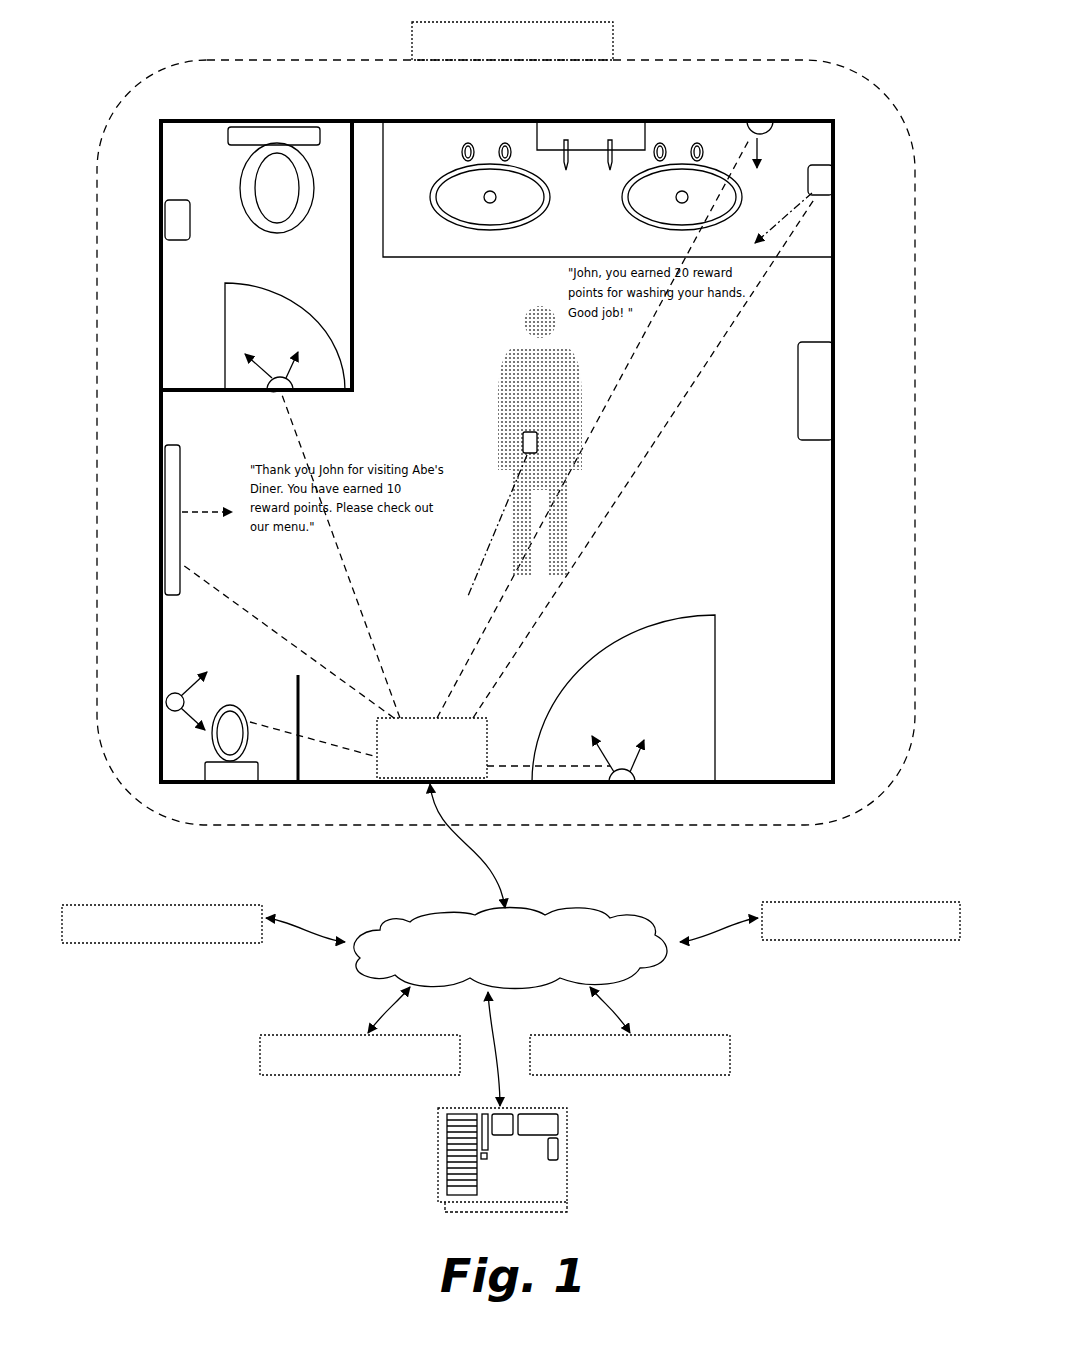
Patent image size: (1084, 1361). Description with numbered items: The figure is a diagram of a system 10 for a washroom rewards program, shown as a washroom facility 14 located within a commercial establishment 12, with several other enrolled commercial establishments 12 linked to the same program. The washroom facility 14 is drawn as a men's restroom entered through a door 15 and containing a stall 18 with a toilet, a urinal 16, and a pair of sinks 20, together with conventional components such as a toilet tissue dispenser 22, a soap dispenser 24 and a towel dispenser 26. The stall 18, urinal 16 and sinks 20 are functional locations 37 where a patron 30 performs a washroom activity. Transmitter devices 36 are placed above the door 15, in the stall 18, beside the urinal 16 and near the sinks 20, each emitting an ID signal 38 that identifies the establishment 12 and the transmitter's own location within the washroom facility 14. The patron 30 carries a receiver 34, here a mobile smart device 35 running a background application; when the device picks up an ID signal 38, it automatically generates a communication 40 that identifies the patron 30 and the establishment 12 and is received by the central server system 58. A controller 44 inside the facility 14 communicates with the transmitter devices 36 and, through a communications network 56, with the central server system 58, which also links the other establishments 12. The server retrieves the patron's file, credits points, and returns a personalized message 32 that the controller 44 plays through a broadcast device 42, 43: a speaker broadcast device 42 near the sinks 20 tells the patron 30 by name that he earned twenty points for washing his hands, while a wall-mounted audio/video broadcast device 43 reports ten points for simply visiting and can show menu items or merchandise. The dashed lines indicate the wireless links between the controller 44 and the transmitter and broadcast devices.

The system 10 is at (118, 90).
The commercial establishment 12 is at (614, 37).
The washroom facility 14 is at (838, 540).
The door 15 is at (717, 684).
The urinal 16 is at (248, 730).
The stall 18 is at (354, 272).
The sink 20 is at (438, 180).
The toilet tissue dispenser 22 is at (192, 212).
The soap dispenser 24 is at (588, 160).
The towel dispenser 26 is at (797, 415).
The patron 30 is at (515, 372).
The personalized message 32 is at (683, 342).
The receiver 34 is at (520, 445).
The mobile smart device 35 is at (538, 440).
The transmitter device 36 is at (755, 125).
The functional location 37 is at (492, 238).
The ID signal 38 is at (765, 158).
The communication 40 is at (463, 595).
The broadcast device 42 is at (818, 180).
The broadcast device 43 is at (162, 462).
The controller 44 is at (377, 738).
The communications network 56 is at (605, 912).
The central server system 58 is at (567, 1172).